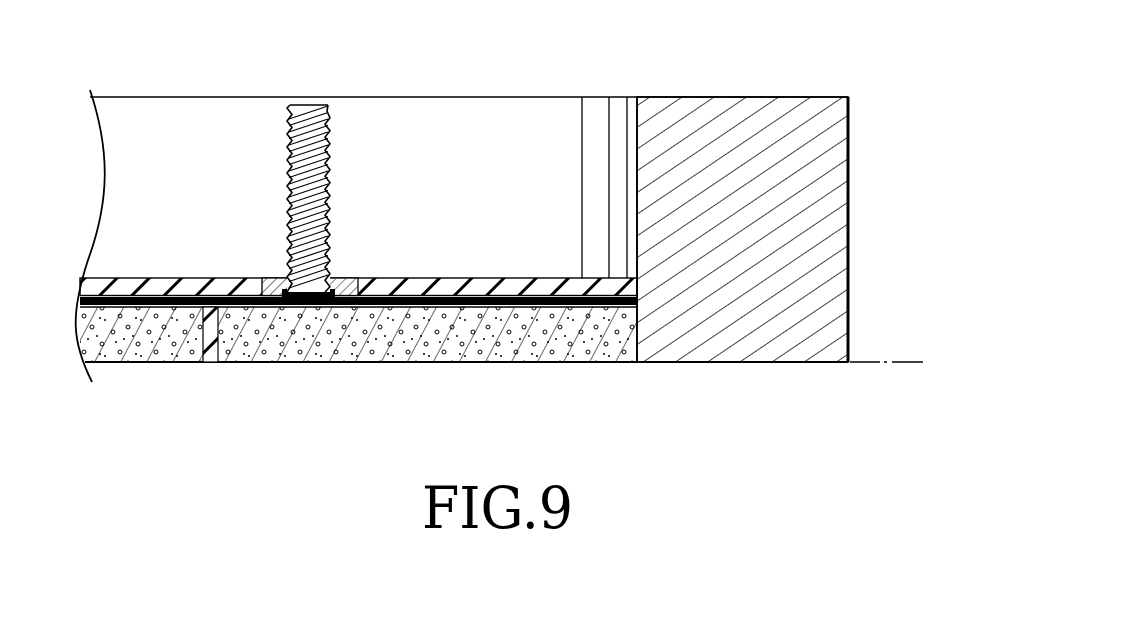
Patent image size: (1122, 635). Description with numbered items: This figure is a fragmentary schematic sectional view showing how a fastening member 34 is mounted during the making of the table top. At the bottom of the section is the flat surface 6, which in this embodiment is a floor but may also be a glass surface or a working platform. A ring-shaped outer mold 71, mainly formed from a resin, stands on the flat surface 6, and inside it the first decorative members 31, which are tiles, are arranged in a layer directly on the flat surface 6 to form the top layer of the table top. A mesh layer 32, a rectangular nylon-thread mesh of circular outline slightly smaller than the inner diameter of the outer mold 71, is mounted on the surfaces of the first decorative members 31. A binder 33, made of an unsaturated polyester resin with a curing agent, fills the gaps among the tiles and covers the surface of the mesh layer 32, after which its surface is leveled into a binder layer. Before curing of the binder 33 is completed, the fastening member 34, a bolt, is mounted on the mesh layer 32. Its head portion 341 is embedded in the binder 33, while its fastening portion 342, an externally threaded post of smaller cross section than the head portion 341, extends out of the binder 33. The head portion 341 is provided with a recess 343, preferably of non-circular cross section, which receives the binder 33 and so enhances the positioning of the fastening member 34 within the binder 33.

The flat surface 6 is at (866, 360).
The first decorative members 31 is at (523, 347).
The mesh layer 32 is at (388, 303).
The binder 33 is at (560, 290).
The fastening members 34 is at (312, 228).
The head portion 341 is at (273, 277).
The fastening portion 342 is at (315, 105).
The recess 343 is at (305, 298).
The outer mold 71 is at (715, 342).